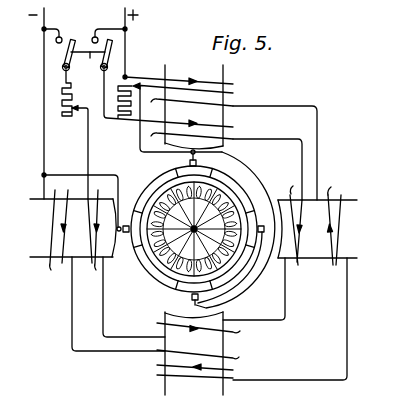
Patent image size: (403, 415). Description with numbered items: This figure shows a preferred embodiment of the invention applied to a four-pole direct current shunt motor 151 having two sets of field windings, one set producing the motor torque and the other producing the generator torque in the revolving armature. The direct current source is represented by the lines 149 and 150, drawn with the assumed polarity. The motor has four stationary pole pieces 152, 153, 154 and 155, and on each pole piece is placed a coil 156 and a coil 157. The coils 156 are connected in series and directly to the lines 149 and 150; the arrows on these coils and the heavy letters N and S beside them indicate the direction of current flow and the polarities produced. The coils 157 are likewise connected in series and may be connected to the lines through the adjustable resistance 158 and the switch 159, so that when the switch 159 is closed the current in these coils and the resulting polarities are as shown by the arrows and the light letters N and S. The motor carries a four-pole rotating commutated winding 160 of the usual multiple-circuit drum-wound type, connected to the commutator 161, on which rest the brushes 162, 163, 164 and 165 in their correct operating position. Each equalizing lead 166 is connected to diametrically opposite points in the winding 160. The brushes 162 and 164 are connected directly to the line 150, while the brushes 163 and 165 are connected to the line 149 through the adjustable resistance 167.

The line 149 is at (127, 43).
The line 150 is at (44, 48).
The shunt motor 151 is at (275, 139).
The stationary pole piece 152 is at (173, 108).
The stationary pole piece 153 is at (291, 290).
The stationary pole piece 154 is at (187, 353).
The stationary pole piece 155 is at (97, 266).
The coil 156 is at (198, 234).
The coil 157 is at (191, 236).
The adjustable resistance 158 is at (73, 95).
The switch 159 is at (88, 57).
The rotating commutated winding 160 is at (163, 196).
The commutator 161 is at (170, 177).
The brush 162 is at (125, 234).
The brush 163 is at (198, 163).
The brush 164 is at (263, 226).
The brush 165 is at (192, 297).
The equalizing lead 166 is at (229, 233).
The adjustable resistance 167 is at (118, 92).